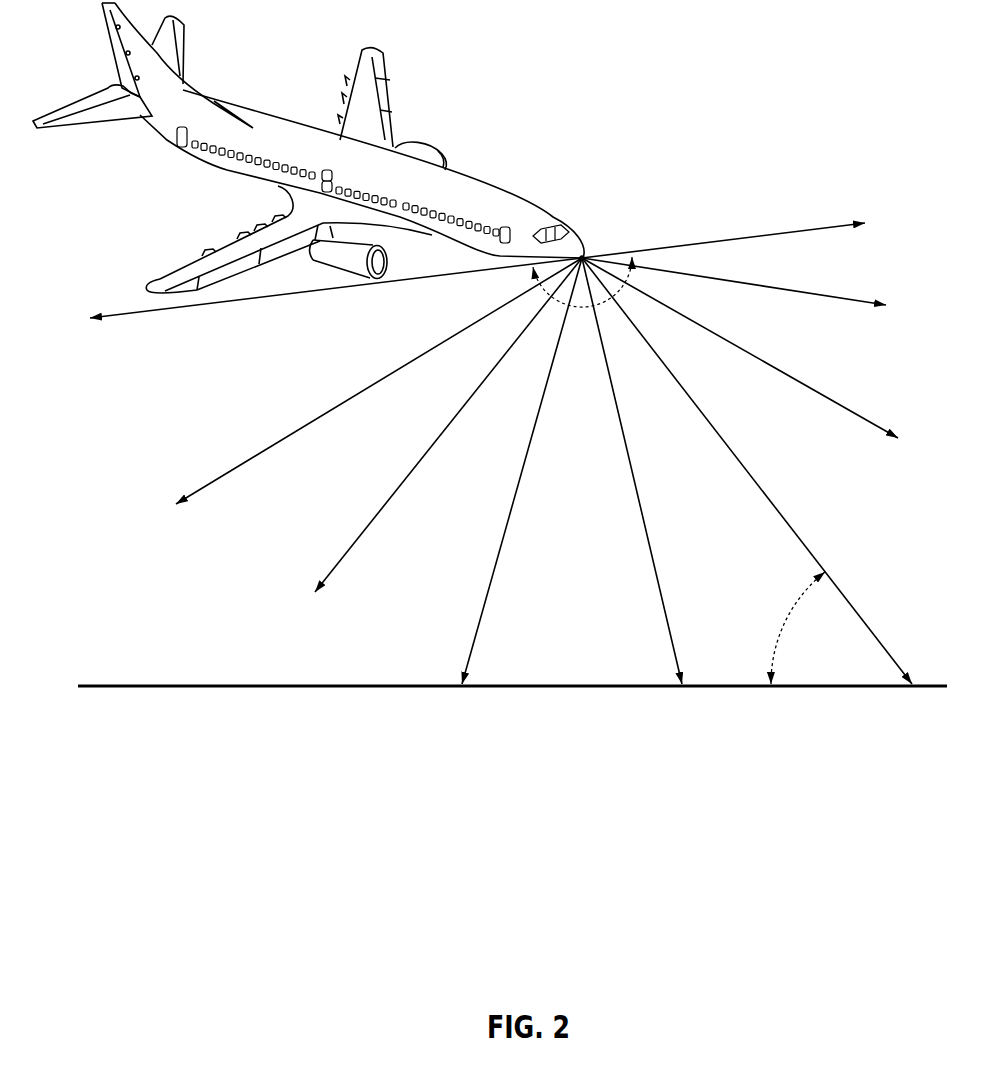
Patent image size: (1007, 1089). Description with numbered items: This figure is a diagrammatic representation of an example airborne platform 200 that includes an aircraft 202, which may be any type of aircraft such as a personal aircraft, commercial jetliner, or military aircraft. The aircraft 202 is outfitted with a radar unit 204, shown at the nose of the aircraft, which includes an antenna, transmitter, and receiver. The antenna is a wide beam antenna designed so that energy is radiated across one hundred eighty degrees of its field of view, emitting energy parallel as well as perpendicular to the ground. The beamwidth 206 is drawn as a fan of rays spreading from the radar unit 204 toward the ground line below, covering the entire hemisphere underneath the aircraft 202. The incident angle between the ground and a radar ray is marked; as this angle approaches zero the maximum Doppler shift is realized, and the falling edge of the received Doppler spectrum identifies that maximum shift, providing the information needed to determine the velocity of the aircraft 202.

The airborne platform 200 is at (684, 80).
The aircraft 202 is at (285, 123).
The radar unit 204 is at (585, 256).
The beamwidth 206 is at (723, 240).